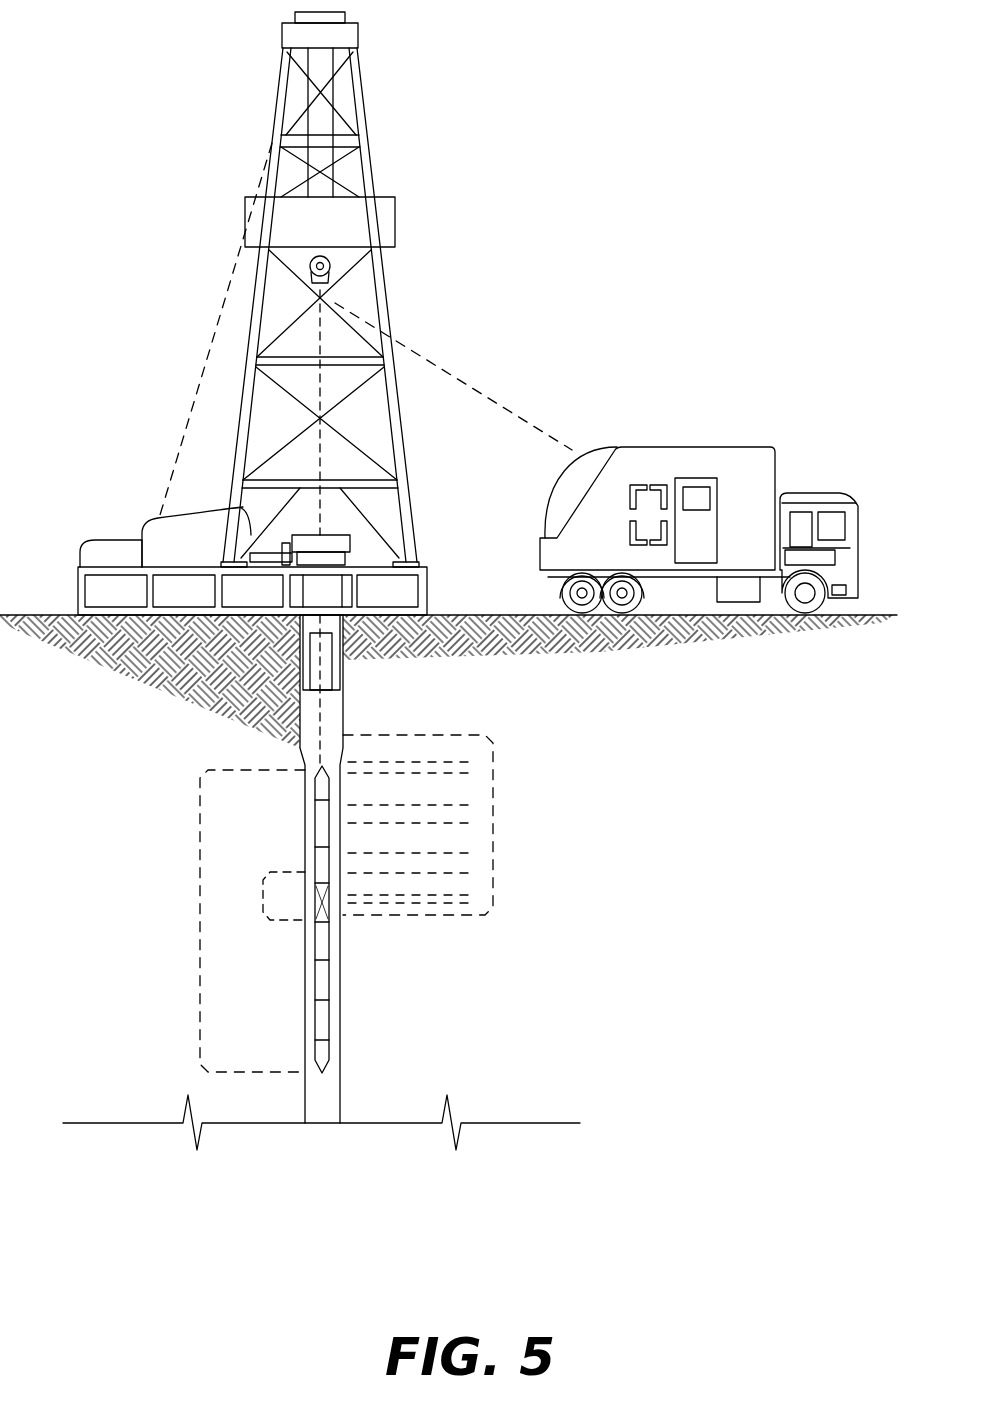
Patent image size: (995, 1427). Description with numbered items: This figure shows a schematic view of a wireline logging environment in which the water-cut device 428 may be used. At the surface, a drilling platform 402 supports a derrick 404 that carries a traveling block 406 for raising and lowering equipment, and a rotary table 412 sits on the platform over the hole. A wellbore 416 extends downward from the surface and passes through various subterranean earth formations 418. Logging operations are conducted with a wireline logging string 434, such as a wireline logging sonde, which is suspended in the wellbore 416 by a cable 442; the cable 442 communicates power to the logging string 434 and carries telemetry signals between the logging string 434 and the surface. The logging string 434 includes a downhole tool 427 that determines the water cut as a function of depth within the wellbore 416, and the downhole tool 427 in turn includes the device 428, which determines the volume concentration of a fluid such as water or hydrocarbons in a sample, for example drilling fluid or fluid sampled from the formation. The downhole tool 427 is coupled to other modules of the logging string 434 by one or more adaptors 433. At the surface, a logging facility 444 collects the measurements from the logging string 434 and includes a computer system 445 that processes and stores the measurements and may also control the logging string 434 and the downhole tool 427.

The drilling platform 402 is at (427, 590).
The derrick 404 is at (392, 296).
The traveling block 406 is at (291, 252).
The rotary table 412 is at (337, 535).
The wellbore 416 is at (305, 790).
The subterranean earth formations 418 is at (493, 820).
The downhole tool 427 is at (263, 897).
The device 428 is at (325, 899).
The adaptors 433 is at (318, 861).
The wireline logging string 434 is at (200, 932).
The cable 442 is at (443, 367).
The logging facility 444 is at (712, 447).
The computer system 445 is at (657, 484).